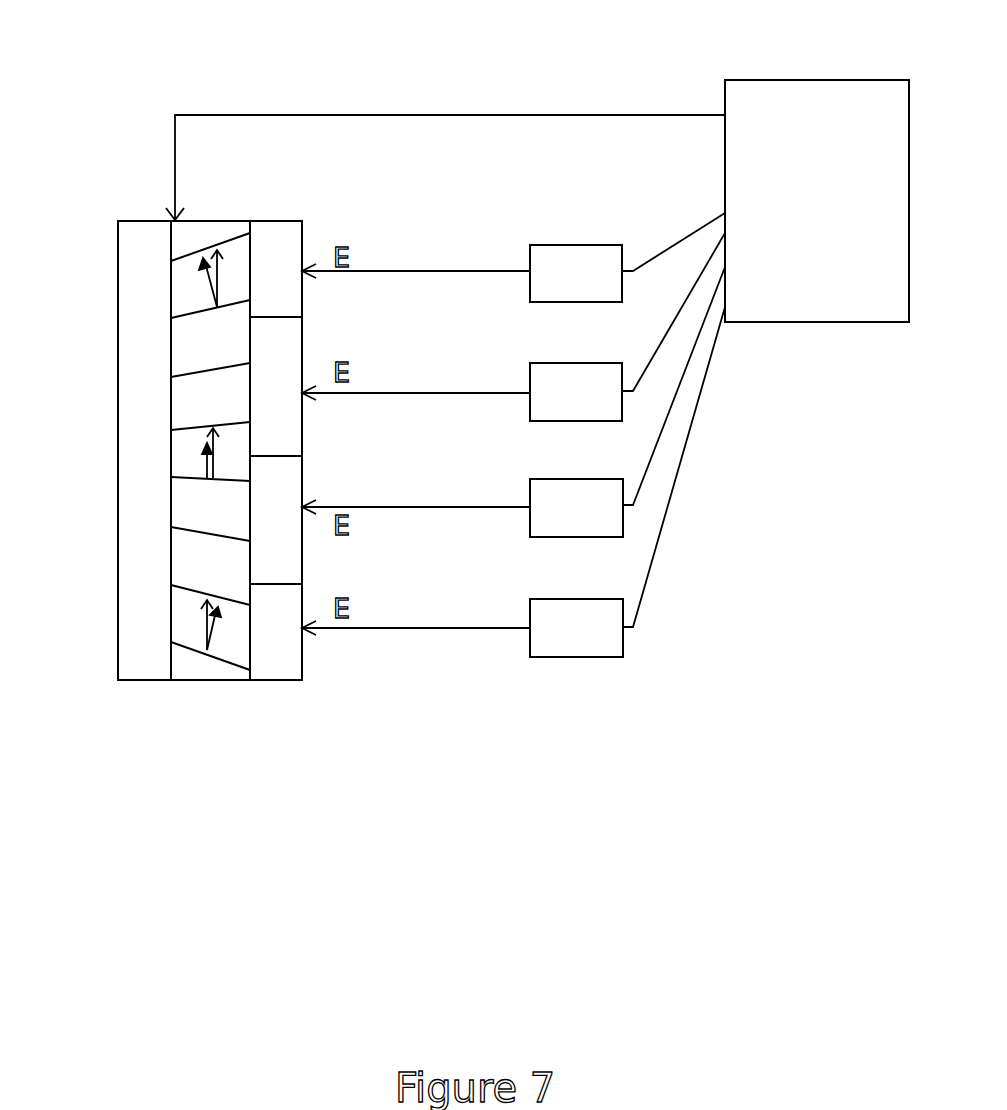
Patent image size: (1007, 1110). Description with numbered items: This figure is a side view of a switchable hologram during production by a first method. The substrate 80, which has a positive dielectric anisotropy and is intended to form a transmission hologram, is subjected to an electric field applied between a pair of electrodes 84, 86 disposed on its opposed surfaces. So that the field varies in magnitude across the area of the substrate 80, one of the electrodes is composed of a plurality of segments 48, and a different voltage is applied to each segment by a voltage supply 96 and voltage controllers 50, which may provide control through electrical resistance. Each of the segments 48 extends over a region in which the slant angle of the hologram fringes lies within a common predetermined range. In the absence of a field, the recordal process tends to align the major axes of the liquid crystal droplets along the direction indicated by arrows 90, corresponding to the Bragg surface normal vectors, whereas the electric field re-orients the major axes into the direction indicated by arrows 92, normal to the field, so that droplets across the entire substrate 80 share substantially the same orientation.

The segments 48 is at (278, 230).
The voltage controllers 50 is at (575, 377).
The substrate 80 is at (189, 680).
The electrode 84 is at (303, 225).
The electrode 86 is at (128, 490).
The arrows 90 is at (340, 297).
The arrows 92 is at (327, 693).
The voltage supply 96 is at (805, 80).